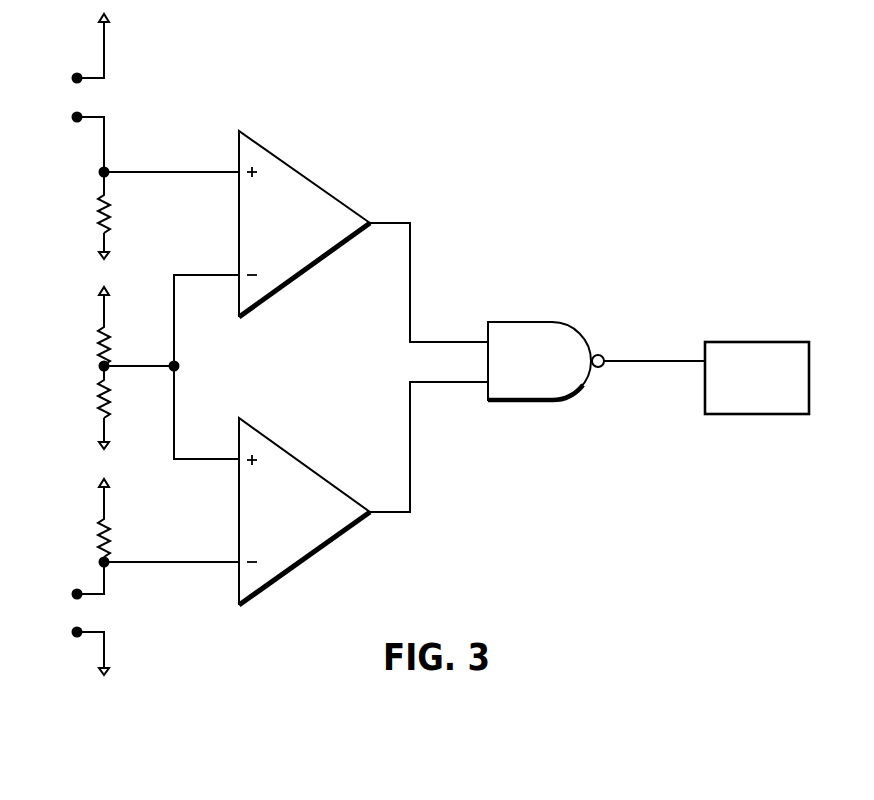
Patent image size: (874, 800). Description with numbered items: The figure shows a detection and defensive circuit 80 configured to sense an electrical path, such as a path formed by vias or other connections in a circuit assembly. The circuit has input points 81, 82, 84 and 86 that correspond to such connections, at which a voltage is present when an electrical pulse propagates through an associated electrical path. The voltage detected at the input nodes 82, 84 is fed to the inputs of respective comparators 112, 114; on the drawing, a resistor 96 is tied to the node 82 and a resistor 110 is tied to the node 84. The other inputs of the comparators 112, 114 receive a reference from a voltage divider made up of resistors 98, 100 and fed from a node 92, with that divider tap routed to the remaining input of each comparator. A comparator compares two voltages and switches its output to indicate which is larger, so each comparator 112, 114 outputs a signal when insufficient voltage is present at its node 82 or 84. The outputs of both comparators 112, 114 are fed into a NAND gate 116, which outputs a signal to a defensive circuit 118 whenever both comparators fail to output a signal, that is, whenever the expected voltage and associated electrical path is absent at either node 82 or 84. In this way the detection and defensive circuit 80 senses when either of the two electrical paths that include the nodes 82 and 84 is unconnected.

The detection and defensive circuit 80 is at (552, 159).
The input point 81 is at (72, 75).
The input point 82 is at (72, 116).
The input point 84 is at (72, 594).
The input point 86 is at (72, 632).
The node 92 is at (178, 366).
The resistor 96 is at (112, 212).
The resistor 98 is at (100, 326).
The resistor 100 is at (109, 405).
The resistor 110 is at (100, 518).
The comparator 112 is at (324, 186).
The comparator 114 is at (312, 470).
The NAND gate 116 is at (508, 322).
The defensive circuit 118 is at (744, 414).